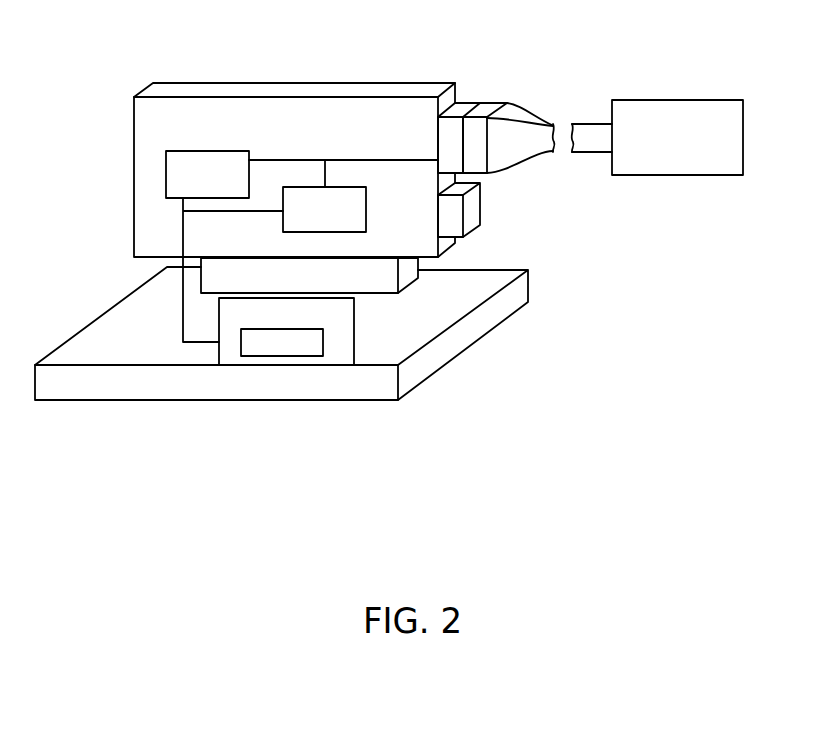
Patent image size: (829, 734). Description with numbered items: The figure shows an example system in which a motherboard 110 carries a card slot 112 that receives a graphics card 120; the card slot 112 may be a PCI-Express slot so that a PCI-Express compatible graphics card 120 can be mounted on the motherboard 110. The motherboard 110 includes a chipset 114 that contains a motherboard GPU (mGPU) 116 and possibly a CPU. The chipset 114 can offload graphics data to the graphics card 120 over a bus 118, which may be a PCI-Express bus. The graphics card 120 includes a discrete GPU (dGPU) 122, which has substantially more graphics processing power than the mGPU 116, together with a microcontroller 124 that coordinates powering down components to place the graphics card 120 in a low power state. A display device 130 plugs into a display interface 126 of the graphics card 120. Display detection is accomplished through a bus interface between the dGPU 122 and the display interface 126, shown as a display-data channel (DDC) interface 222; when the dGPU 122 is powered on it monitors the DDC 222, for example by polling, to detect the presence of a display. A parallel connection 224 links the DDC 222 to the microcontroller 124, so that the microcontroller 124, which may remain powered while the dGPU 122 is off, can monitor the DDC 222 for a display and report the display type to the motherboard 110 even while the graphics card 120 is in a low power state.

The motherboard 110 is at (338, 397).
The card slot 112 is at (412, 278).
The chipset 114 is at (366, 308).
The motherboard GPU (mGPU) 116 is at (336, 345).
The bus 118 is at (160, 300).
The graphics card 120 is at (414, 104).
The discrete GPU (dGPU) 122 is at (152, 178).
The microcontroller 124 is at (377, 222).
The display interface 126 is at (480, 204).
The display device 130 is at (694, 88).
The display-data channel (DDC) interface 222 is at (297, 154).
The link 224 is at (326, 172).